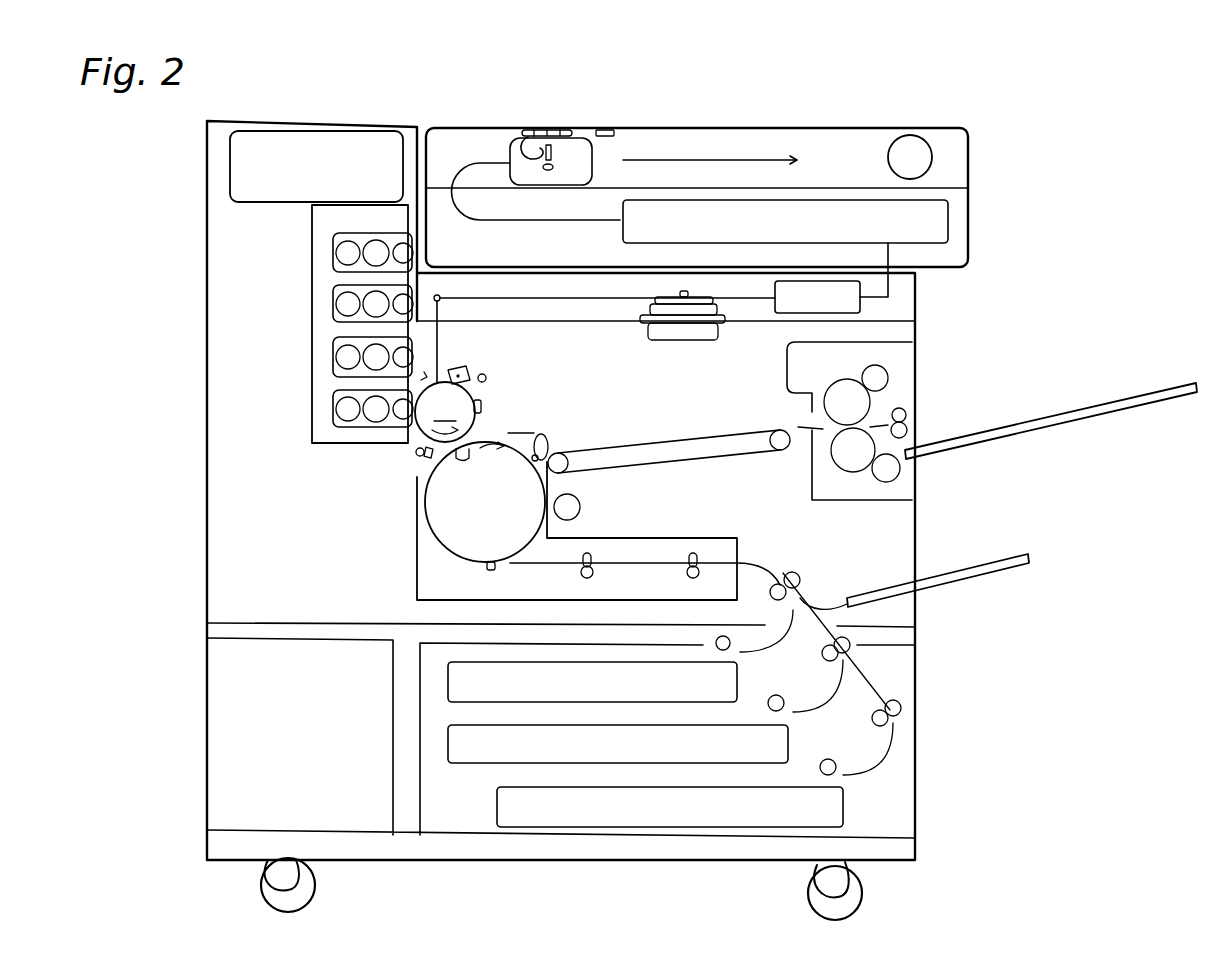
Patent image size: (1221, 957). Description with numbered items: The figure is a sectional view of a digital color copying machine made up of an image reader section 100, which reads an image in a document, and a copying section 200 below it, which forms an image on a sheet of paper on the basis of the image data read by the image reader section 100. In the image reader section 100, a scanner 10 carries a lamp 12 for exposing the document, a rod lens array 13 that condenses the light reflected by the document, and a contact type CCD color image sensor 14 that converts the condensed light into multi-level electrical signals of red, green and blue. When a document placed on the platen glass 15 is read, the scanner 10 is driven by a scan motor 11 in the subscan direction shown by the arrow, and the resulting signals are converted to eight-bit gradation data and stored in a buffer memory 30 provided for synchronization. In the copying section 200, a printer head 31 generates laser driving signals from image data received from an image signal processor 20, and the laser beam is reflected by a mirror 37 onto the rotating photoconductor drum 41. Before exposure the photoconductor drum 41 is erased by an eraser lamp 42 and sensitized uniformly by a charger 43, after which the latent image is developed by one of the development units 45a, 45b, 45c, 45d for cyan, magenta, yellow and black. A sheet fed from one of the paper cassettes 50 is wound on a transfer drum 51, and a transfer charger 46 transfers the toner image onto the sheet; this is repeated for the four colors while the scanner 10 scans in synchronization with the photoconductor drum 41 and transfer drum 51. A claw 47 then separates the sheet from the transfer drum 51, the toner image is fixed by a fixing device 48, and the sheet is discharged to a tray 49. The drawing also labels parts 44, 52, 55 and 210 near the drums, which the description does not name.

The scanner 10 is at (592, 158).
The scan motor 11 is at (928, 140).
The lamp 12 is at (523, 134).
The rod lens array 13 is at (574, 137).
The CCD color image sensor 14 is at (548, 172).
The platen glass 15 is at (740, 131).
The image signal processor 20 is at (940, 225).
The buffer memory 30 is at (862, 306).
The printer head 31 is at (702, 342).
The mirror 37 is at (441, 296).
The photoconductor drum 41 is at (448, 412).
The eraser lamp 42 is at (487, 378).
The charger 43 is at (462, 368).
The cleaning unit 44 is at (424, 377).
The development unit 45a is at (333, 256).
The development unit 45b is at (333, 308).
The development unit 45c is at (333, 357).
The development unit 45d is at (333, 414).
The transfer charger 46 is at (466, 462).
The claw 47 is at (548, 437).
The fixing device 48 is at (905, 390).
The tray 49 is at (1080, 408).
The paper cassettes 50 is at (497, 810).
The transfer drum 51 is at (443, 556).
The cleaning member 52 is at (494, 573).
The transfer roller 55 is at (416, 452).
The image reader section 100 is at (970, 160).
The copying section 200 is at (207, 372).
The transfer charger 210 is at (428, 460).